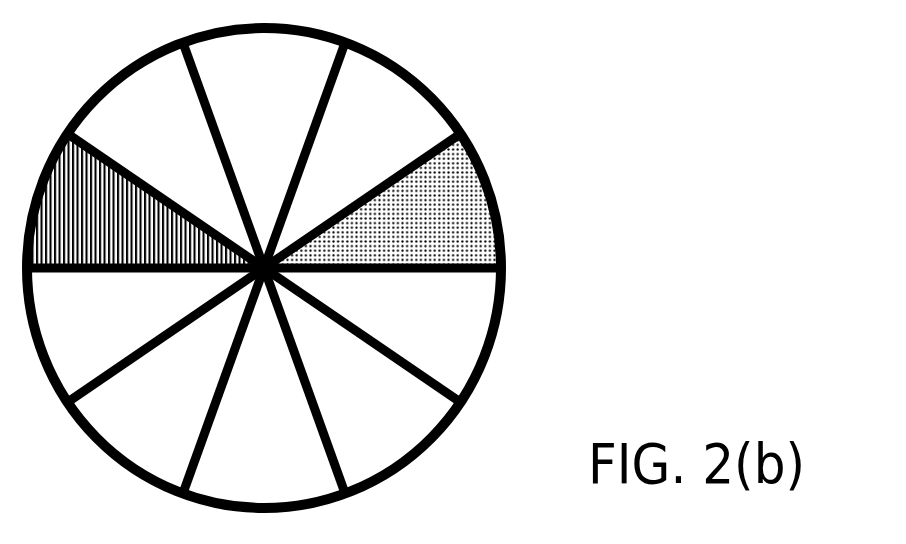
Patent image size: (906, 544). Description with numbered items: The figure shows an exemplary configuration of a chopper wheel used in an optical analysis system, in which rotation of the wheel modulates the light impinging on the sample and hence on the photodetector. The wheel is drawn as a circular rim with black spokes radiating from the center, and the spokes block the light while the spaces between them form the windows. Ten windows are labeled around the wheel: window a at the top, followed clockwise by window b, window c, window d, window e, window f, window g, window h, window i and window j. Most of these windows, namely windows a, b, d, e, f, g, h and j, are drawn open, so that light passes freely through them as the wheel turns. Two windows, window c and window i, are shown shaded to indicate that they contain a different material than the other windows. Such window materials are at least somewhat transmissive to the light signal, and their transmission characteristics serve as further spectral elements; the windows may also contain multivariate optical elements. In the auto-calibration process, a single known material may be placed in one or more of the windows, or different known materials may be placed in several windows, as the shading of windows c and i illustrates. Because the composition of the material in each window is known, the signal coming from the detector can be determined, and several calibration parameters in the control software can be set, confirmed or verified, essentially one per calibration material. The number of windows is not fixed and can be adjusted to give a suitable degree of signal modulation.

The chopper wheel window a is at (264, 148).
The chopper wheel window b is at (362, 156).
The shaded chopper wheel window c is at (382, 201).
The chopper wheel window d is at (382, 335).
The chopper wheel window e is at (362, 381).
The chopper wheel window f is at (264, 388).
The chopper wheel window g is at (166, 381).
The chopper wheel window h is at (145, 335).
The shaded chopper wheel window i is at (145, 201).
The chopper wheel window j is at (166, 156).